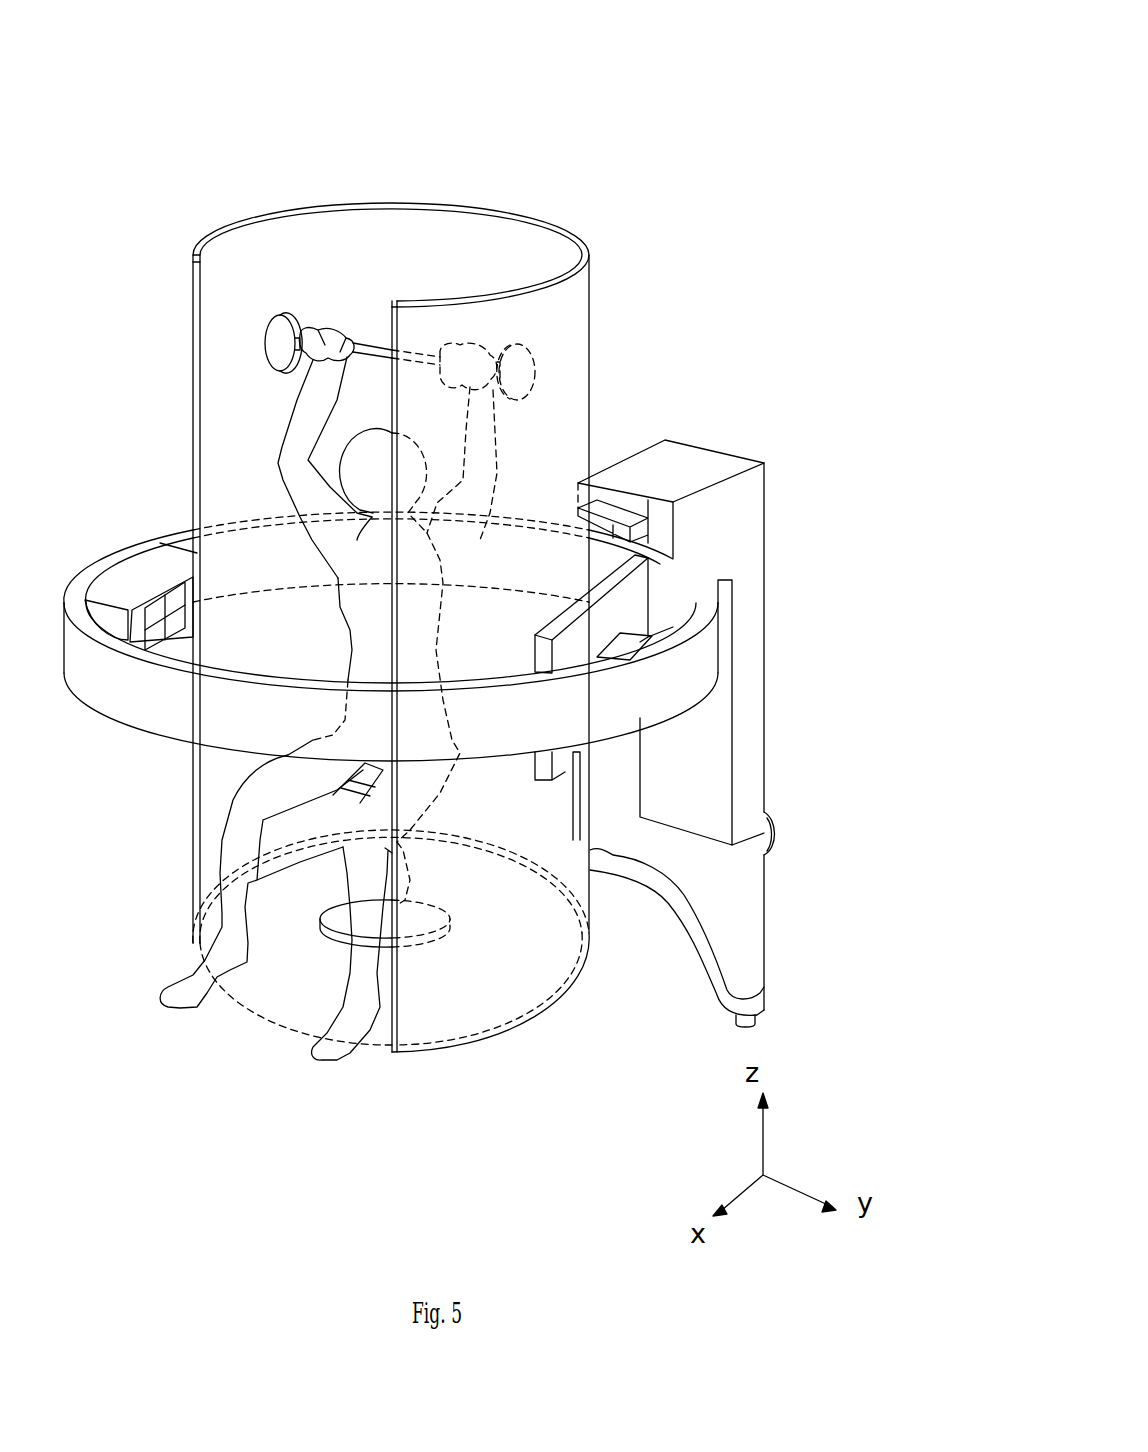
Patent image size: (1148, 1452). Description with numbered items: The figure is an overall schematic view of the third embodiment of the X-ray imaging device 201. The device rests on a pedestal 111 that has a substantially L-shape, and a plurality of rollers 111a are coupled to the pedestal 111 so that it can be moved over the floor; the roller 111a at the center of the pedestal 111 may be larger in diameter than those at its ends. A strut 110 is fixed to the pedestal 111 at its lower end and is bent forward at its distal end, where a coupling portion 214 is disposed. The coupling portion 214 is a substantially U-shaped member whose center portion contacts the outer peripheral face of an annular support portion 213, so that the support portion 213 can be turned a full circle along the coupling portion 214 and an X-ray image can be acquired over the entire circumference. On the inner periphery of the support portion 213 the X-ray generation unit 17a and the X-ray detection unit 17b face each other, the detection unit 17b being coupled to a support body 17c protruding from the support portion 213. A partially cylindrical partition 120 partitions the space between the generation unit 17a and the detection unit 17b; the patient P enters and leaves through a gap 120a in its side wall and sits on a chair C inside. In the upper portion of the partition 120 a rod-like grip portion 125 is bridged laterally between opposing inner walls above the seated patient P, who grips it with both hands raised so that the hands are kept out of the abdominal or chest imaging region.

The X-ray imaging device 201 is at (737, 112).
The partition 120 is at (586, 312).
The gap 120a is at (196, 252).
The grip portion 125 is at (367, 343).
The support portion 213 is at (707, 643).
The coupling portion 214 is at (620, 502).
The X-ray generation unit 17a is at (153, 637).
The X-ray detection unit 17b is at (573, 752).
The support body 17c is at (627, 647).
The strut 110 is at (747, 742).
The pedestal 111 is at (748, 930).
The roller 111a is at (753, 1018).
The chair C is at (415, 947).
The patient P is at (338, 1042).